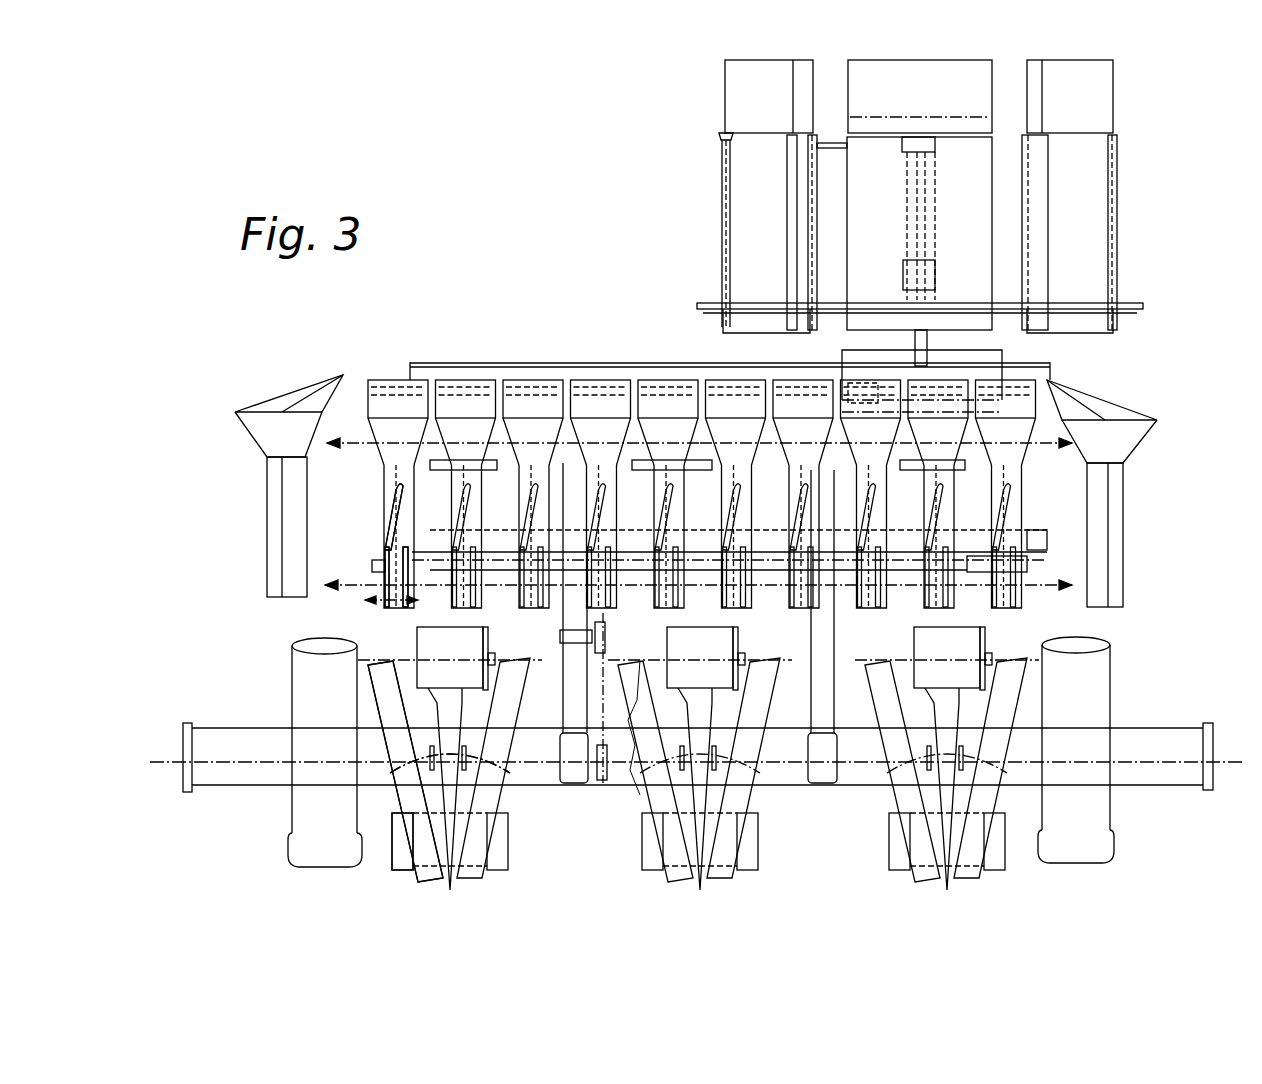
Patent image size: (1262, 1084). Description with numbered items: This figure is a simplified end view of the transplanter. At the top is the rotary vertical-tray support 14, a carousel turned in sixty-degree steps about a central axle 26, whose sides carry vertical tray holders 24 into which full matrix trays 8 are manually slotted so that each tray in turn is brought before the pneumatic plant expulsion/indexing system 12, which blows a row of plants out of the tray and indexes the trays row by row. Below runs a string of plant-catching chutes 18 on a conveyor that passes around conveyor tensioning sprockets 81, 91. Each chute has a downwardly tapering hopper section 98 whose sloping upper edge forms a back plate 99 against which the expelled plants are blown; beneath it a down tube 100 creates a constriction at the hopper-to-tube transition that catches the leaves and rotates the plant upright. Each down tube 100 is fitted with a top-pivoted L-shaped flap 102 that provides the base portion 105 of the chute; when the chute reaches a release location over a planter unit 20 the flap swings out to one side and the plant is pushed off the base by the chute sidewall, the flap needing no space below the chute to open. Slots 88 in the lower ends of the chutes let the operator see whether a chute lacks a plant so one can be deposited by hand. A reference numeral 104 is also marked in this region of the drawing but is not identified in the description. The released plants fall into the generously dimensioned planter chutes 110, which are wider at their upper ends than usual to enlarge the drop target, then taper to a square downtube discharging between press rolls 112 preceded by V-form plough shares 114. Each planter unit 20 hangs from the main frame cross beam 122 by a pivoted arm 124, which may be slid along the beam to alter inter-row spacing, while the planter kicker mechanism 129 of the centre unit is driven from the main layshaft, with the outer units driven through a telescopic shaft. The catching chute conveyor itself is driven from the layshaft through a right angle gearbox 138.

The rotary vertical-tray support 14 is at (1168, 172).
The vertical tray holder 24 is at (1035, 218).
The pneumatic plant expulsion/indexing system 12 is at (892, 346).
The matrix tray 8 is at (893, 345).
The central axle 26 is at (920, 355).
The back plate 99 is at (315, 383).
The conveyor tensioning sprocket 91 is at (350, 438).
The hopper section 98 is at (257, 428).
The down tube 100 is at (272, 530).
The L-shaped flap 102 is at (382, 515).
The slot 88 is at (372, 572).
The conveyor tensioning sprocket 81 is at (1057, 452).
The plant-catching chute 18 is at (1123, 497).
The adjusting bar 104 is at (987, 570).
The base portion 105 is at (1000, 608).
The kicker mechanism 129 is at (920, 640).
The right angle gearbox 138 is at (564, 628).
The planter chute 110 is at (292, 650).
The planter unit 20 is at (357, 688).
The main frame cross beam 122 is at (200, 742).
The pivoted arm 124 is at (400, 750).
The press roll 112 is at (420, 848).
The V-form plough share 114 is at (510, 840).